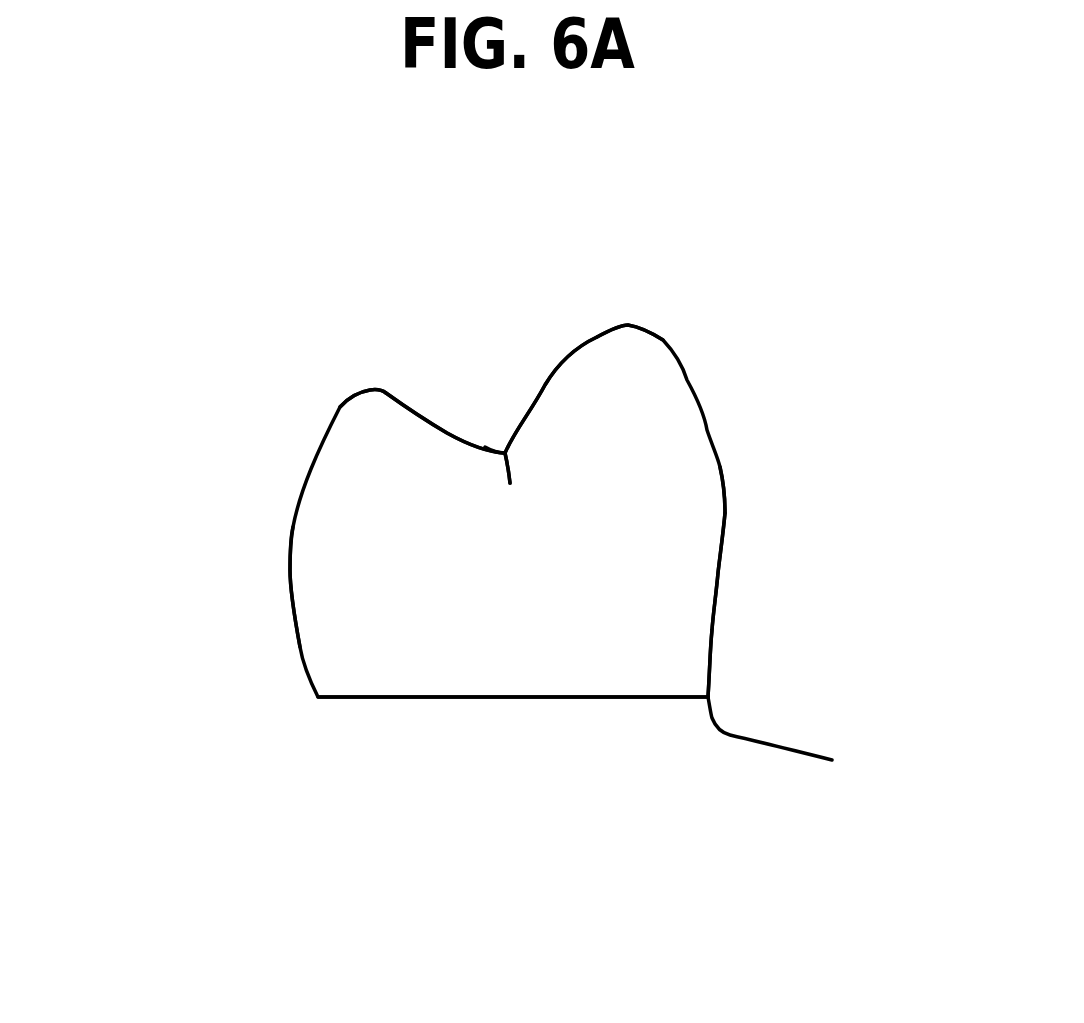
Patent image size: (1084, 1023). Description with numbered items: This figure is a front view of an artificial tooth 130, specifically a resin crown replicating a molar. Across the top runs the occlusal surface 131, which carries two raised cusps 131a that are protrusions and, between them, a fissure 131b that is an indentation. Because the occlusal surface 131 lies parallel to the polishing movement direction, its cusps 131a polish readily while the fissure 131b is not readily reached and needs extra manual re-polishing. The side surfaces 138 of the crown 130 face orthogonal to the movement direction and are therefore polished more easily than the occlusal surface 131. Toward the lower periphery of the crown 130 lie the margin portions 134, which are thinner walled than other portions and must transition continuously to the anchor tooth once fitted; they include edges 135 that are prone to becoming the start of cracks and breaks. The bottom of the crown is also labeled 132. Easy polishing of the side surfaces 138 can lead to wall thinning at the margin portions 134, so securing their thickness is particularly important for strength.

The artificial tooth 130 is at (718, 467).
The occlusal surface 131 is at (478, 357).
The cusp 131a is at (370, 390).
The fissure 131b is at (505, 453).
The bottom surface 132 is at (517, 720).
The margin portion 134 is at (743, 545).
The edge 135 is at (810, 747).
The side surface 138 is at (290, 570).